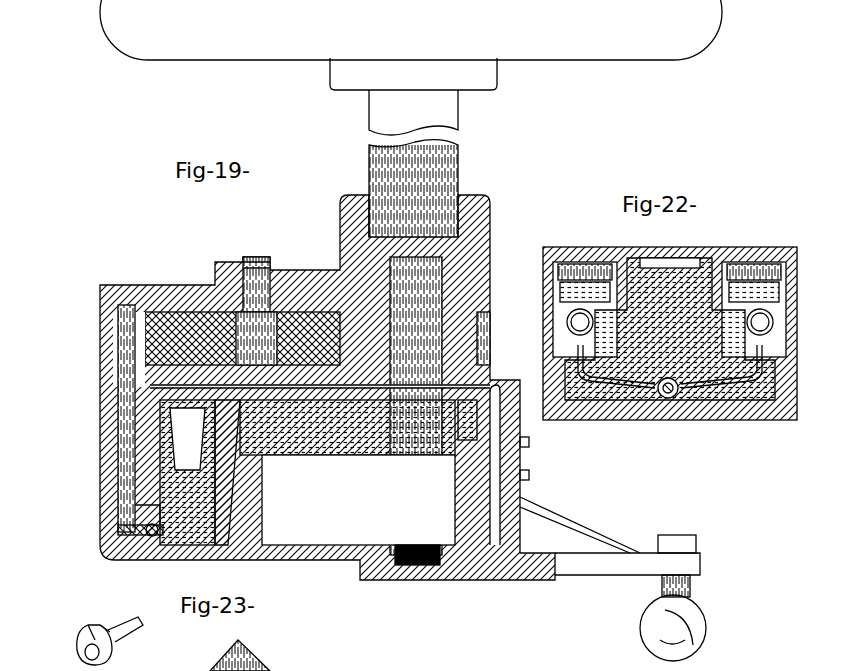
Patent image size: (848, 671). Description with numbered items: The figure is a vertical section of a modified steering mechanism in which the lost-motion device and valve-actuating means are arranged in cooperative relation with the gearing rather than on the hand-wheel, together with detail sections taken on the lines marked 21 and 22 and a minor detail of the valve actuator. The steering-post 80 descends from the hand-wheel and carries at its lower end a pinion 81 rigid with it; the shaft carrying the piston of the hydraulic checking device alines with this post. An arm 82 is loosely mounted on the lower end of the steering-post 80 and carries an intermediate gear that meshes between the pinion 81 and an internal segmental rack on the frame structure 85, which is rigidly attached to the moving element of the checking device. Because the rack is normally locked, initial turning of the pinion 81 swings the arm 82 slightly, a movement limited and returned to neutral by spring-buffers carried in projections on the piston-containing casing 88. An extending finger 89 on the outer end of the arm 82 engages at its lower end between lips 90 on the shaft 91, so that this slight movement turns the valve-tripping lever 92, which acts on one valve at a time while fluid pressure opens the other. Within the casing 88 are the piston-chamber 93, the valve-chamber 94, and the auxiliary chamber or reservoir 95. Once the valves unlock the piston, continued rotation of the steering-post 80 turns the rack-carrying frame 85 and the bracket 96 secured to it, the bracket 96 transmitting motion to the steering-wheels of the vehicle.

In FIG. 19, the section line 21 is at (67, 474).
In FIG. 19, the section line 22 is at (198, 252).
In FIG. 19, the steering-post 80 is at (462, 177).
In FIG. 19, the pinion 81 is at (480, 333).
In FIG. 19, the arm 82 is at (318, 285).
In FIG. 19, the frame structure 85 is at (150, 345).
In FIG. 22, the piston-containing casing 88 is at (790, 285).
In FIG. 19, the extending finger 89 is at (120, 378).
In FIG. 19, the lips 90 is at (125, 520).
In FIG. 23, the lips 90 is at (92, 625).
In FIG. 19, the shaft 91 is at (150, 560).
In FIG. 22, the shaft 91 is at (668, 400).
In FIG. 23, the shaft 91 is at (128, 634).
In FIG. 22, the valve-tripping lever 92 is at (700, 405).
In FIG. 19, the piston-chamber 93 is at (268, 530).
In FIG. 19, the valve-chamber 94 is at (262, 500).
In FIG. 22, the valve-chamber 94 is at (738, 405).
In FIG. 19, the auxiliary chamber or reservoir 95 is at (330, 430).
In FIG. 19, the bracket 96 is at (582, 570).